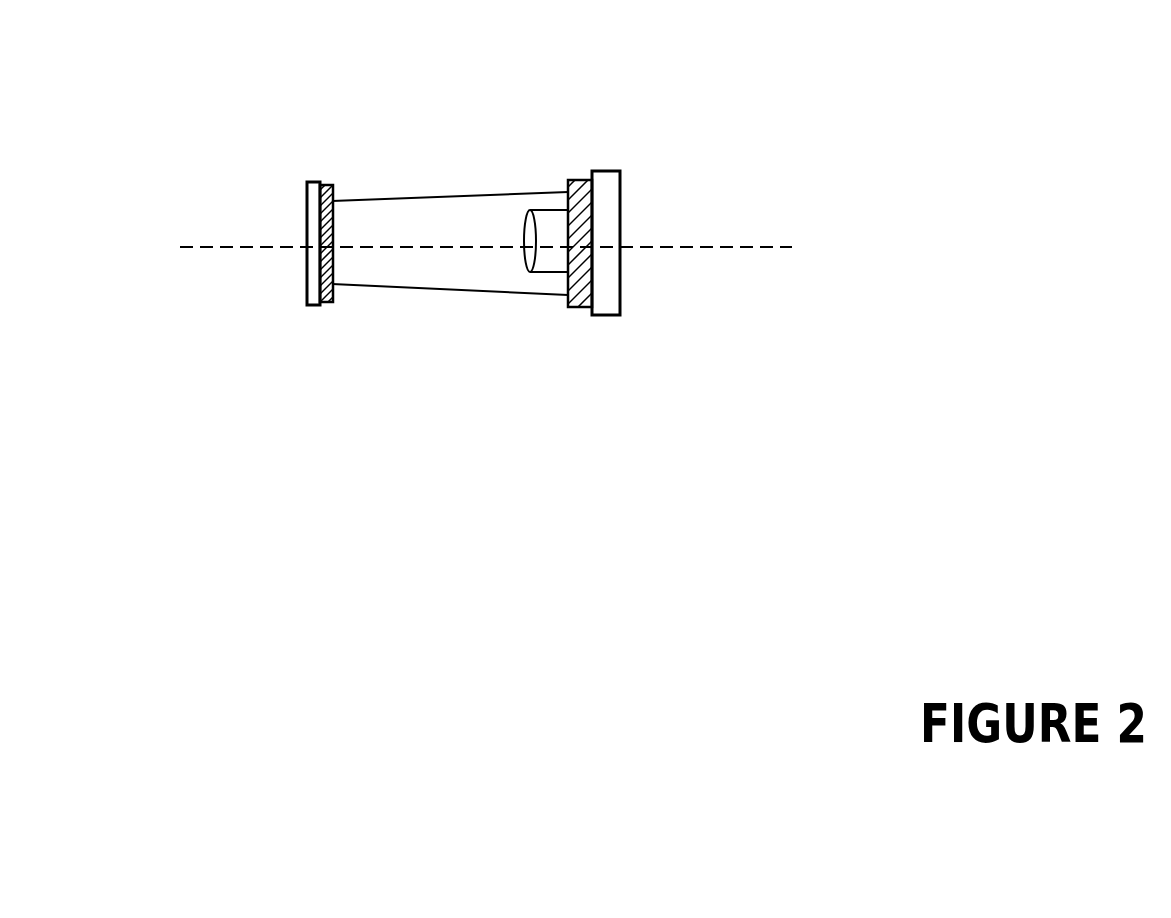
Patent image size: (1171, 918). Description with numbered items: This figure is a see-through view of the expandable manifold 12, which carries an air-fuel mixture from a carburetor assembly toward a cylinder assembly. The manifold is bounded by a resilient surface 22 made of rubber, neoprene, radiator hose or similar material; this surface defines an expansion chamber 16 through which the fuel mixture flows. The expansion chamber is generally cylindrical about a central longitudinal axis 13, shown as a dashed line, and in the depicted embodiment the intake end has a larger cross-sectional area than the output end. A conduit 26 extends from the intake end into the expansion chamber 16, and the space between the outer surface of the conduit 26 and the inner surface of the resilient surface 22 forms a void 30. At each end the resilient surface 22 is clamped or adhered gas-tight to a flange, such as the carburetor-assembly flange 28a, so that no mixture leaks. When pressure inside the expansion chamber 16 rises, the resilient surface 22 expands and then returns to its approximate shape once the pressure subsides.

The expandable manifold 12 is at (481, 245).
The central longitudinal axis 13 is at (668, 247).
The expansion chamber 16 is at (372, 222).
The resilient surface 22 is at (455, 193).
The conduit 26 is at (557, 253).
The flange of the carburetor assembly 28a is at (603, 298).
The void 30 is at (566, 205).